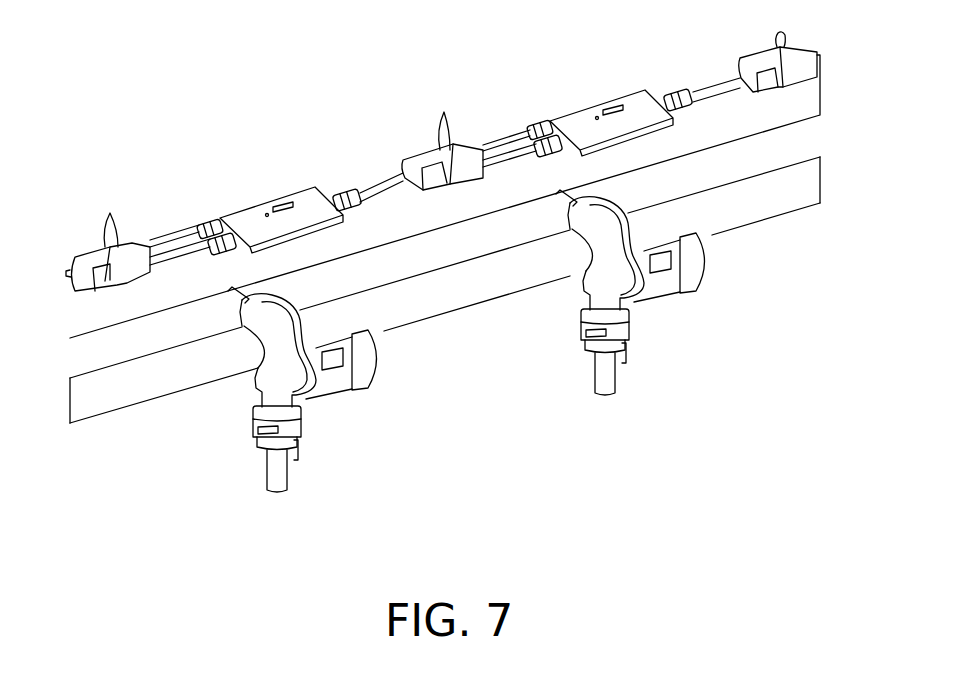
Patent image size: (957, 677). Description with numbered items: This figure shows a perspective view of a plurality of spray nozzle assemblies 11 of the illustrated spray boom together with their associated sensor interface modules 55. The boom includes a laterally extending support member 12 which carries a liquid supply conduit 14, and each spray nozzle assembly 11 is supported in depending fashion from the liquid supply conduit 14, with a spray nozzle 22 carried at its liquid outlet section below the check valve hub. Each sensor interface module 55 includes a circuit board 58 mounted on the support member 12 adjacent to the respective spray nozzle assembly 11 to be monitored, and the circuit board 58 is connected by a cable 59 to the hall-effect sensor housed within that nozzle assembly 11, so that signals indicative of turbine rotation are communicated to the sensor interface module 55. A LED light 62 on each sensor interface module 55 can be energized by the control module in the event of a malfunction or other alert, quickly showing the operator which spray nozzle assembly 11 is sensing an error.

The liquid spray nozzle assembly 11 is at (303, 425).
The support member 12 is at (820, 105).
The liquid supply conduit 14 is at (792, 210).
The spray nozzle 22 is at (384, 364).
The sensor interface module 55 is at (284, 208).
The circuit board 58 is at (232, 212).
The cable 59 is at (237, 296).
The LED light 62 is at (570, 108).